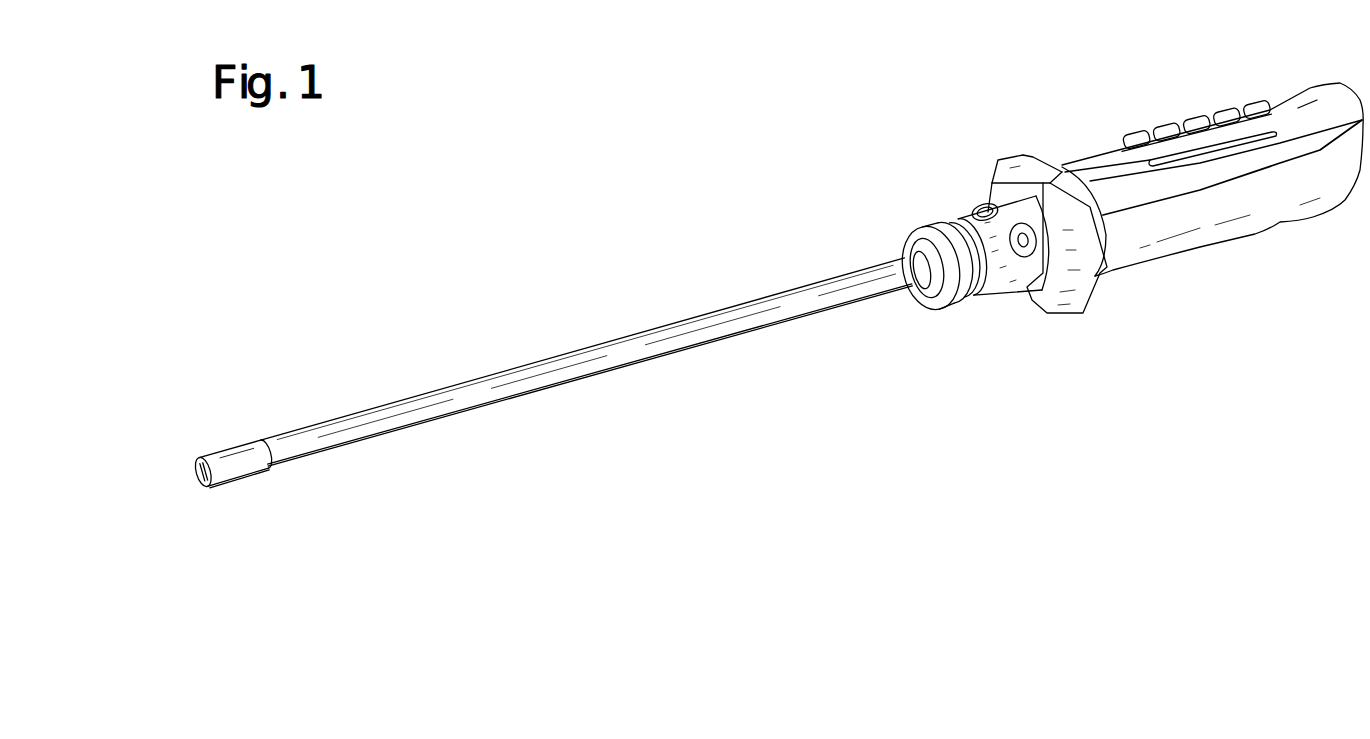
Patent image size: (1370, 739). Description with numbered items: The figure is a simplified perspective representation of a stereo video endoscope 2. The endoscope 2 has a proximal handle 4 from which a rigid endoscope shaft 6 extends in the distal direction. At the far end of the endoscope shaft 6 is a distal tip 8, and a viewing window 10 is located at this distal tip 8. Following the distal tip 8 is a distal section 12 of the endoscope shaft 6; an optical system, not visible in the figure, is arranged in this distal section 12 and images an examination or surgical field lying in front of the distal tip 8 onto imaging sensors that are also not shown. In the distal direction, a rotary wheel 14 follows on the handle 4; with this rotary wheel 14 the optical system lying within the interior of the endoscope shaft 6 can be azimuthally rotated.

The endoscope 2 is at (588, 247).
The proximal handle 4 is at (1232, 240).
The rigid endoscope shaft 6 is at (587, 363).
The distal tip 8 is at (233, 464).
The viewing window 10 is at (203, 472).
The distal section 12 is at (237, 463).
The rotary wheel 14 is at (1068, 318).